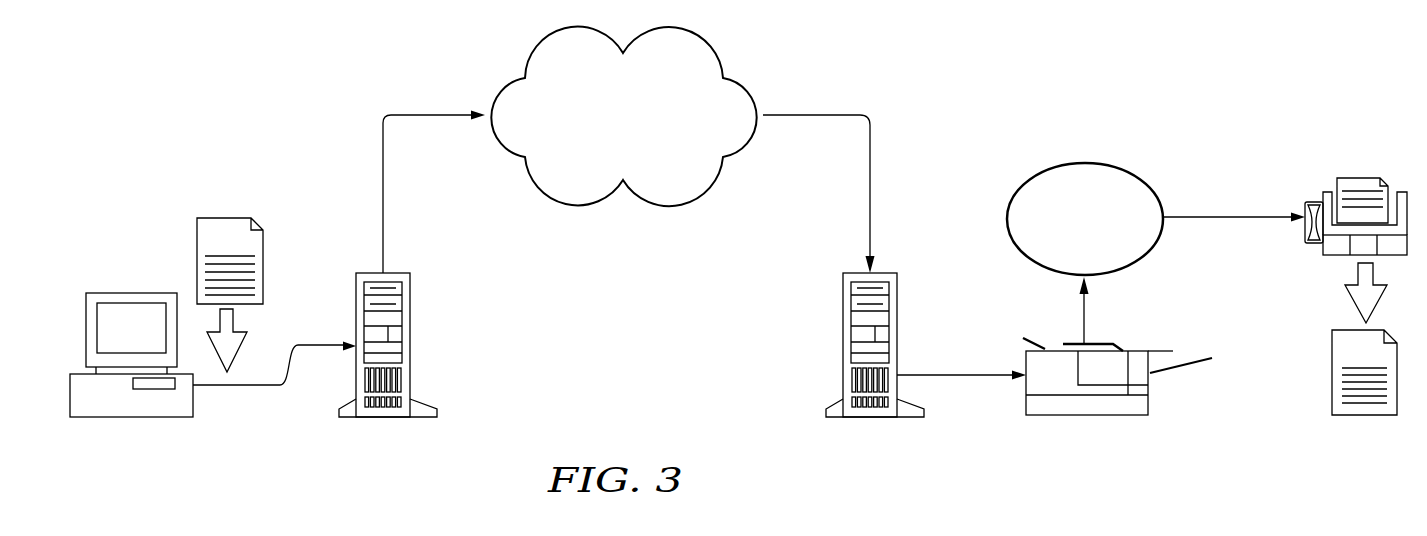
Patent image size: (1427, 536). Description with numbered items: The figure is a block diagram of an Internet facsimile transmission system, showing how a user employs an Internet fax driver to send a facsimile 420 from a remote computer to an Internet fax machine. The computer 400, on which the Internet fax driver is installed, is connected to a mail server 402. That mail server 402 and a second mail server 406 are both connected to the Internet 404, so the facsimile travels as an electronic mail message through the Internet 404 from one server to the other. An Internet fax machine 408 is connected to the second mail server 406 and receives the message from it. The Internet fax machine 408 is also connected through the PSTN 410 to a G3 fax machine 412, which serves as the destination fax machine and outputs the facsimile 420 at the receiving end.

The computer 400 is at (120, 293).
The mail server 402 is at (410, 329).
The Internet 404 is at (703, 55).
The mail server 406 is at (843, 309).
The Internet fax machine 408 is at (1133, 351).
The PSTN 410 is at (1060, 167).
The G3 fax machine 412 is at (1352, 178).
The facsimile 420 is at (223, 218).